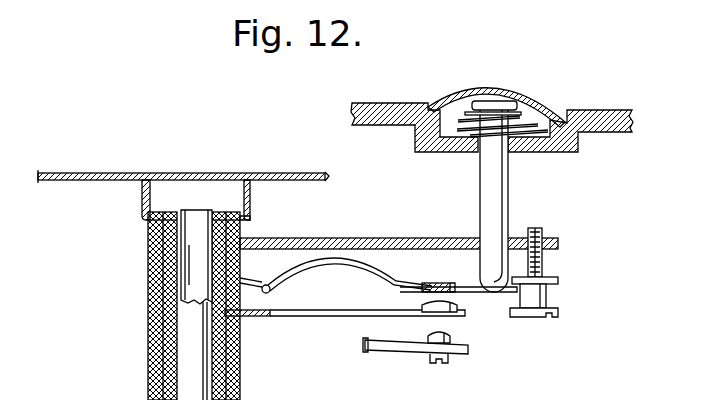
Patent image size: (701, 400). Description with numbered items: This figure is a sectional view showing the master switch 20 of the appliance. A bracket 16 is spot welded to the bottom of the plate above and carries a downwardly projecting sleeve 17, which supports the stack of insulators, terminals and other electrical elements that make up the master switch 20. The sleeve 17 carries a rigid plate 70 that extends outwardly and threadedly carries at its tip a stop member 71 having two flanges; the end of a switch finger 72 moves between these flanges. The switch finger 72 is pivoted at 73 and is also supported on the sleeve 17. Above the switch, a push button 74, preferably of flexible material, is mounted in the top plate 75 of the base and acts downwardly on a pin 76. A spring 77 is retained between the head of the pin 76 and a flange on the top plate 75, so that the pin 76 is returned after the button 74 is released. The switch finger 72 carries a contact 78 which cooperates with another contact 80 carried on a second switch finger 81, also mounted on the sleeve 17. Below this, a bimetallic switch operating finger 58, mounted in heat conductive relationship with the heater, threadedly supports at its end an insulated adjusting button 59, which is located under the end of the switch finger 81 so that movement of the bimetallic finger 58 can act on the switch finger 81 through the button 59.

The bracket 16 is at (146, 196).
The sleeve 17 is at (207, 218).
The master switch 20 is at (574, 296).
The bimetallic switch operating finger 58 is at (384, 349).
The insulated adjusting button 59 is at (441, 363).
The rigid plate 70 is at (383, 237).
The stop member 71 is at (546, 319).
The switch finger 72 is at (479, 293).
The pivot 73 is at (281, 292).
The push button 74 is at (548, 100).
The top plate 75 is at (604, 109).
The pin 76 is at (506, 195).
The spring 77 is at (461, 118).
The contact 78 is at (441, 290).
The contact 80 is at (431, 313).
The switch finger 81 is at (296, 317).